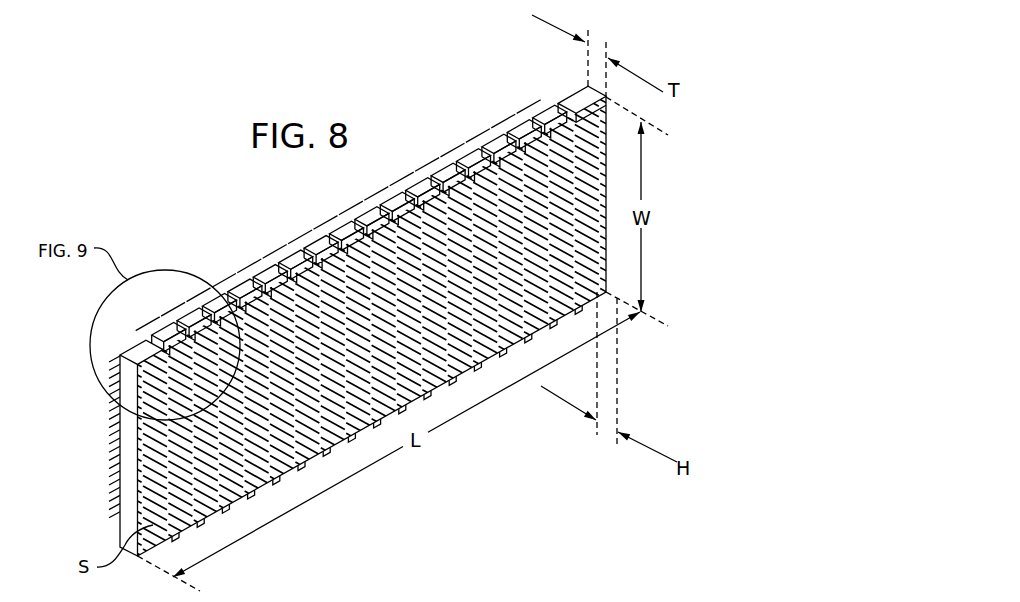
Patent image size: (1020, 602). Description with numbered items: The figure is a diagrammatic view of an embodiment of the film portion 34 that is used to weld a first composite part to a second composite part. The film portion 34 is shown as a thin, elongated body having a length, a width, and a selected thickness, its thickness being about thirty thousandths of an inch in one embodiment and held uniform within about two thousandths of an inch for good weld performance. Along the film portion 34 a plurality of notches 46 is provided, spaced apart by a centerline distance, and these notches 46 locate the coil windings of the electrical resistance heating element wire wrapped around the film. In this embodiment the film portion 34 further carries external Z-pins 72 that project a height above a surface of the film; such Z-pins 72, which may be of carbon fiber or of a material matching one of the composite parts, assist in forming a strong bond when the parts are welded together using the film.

The film portion 34 is at (112, 503).
The notches 46 is at (548, 140).
The external Z-pins 72 is at (362, 323).